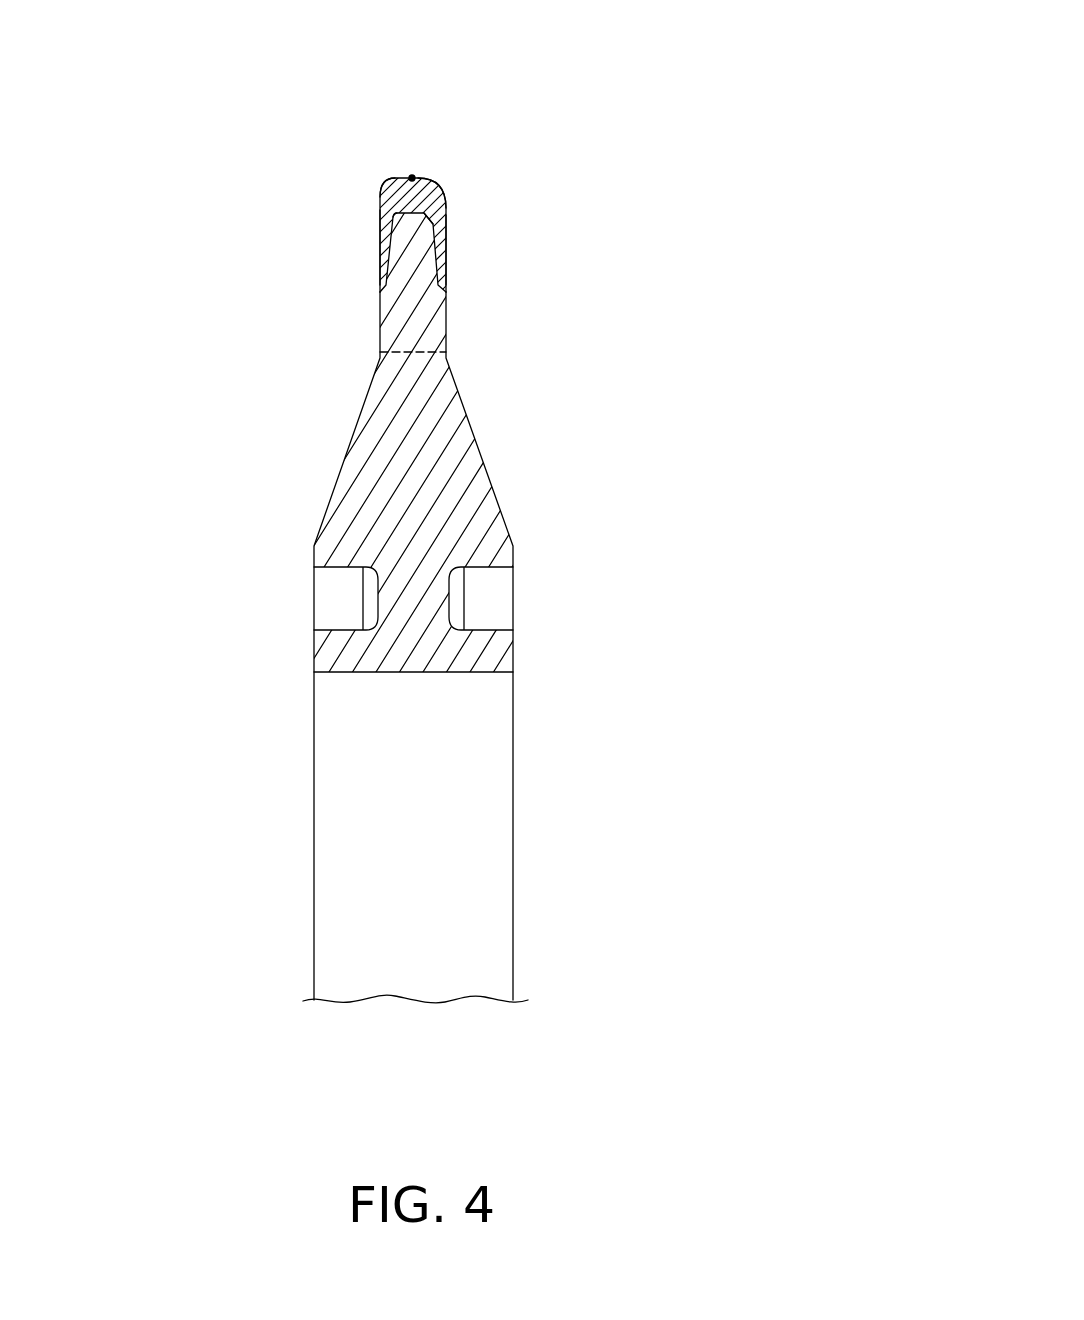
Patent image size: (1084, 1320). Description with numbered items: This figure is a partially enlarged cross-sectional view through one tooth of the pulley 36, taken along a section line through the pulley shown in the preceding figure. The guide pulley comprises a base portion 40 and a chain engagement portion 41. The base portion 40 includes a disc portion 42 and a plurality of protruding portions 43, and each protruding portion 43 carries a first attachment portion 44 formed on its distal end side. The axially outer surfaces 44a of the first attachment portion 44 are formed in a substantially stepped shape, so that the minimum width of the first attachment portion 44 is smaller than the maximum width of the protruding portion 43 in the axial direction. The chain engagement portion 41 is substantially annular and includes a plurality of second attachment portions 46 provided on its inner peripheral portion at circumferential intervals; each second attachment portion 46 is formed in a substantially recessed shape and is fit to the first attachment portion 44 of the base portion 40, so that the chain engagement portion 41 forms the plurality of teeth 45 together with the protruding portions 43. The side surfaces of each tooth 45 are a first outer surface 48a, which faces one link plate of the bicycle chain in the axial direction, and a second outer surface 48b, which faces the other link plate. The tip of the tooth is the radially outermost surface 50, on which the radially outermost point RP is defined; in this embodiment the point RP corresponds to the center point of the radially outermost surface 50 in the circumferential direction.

The pulley 36 is at (553, 118).
The base portion 40 is at (511, 506).
The chain engagement portion 41 is at (410, 172).
The disc portion 42 is at (358, 514).
The protruding portion 43 is at (395, 323).
The first attachment portion 44 is at (444, 204).
The axially outer surface 44a is at (381, 243).
The tooth 45 is at (465, 309).
The second attachment portion 46 is at (378, 214).
The first outer surface 48a is at (382, 232).
The second outer surface 48b is at (446, 210).
The radially outermost surface 50 is at (416, 178).
The radially outermost point RP is at (408, 176).